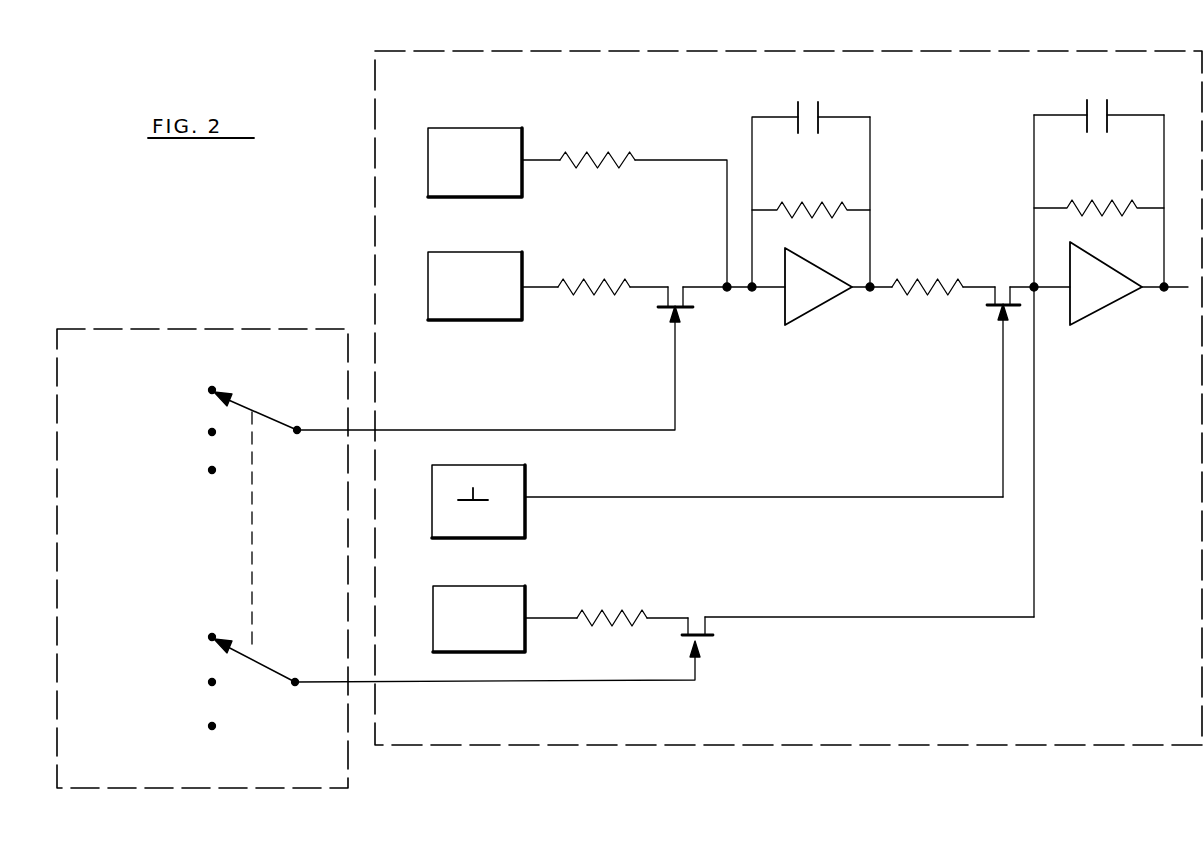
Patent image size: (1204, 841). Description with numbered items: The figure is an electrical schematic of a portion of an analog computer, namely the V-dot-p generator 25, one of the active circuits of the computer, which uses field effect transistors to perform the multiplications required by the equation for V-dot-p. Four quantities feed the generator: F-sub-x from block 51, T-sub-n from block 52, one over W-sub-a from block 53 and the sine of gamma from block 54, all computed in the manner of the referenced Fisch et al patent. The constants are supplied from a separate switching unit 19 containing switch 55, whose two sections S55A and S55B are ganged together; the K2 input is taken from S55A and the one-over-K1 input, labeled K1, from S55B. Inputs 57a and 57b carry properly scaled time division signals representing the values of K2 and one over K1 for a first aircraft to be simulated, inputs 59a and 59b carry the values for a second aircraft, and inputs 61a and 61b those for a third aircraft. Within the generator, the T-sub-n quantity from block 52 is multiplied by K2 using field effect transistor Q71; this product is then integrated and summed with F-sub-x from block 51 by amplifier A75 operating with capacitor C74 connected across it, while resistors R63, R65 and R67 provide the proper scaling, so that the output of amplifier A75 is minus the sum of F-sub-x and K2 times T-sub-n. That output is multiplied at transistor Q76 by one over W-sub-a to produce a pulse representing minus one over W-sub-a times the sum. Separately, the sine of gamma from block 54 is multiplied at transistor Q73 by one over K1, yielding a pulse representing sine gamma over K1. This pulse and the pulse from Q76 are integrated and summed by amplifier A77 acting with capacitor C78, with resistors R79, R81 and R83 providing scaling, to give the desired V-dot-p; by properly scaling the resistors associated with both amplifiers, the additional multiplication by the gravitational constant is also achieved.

The $v_p$ generator 25 is at (783, 51).
The switching unit 19 is at (208, 329).
The $F_x$ block 51 is at (430, 170).
The $T_n$ block 52 is at (430, 308).
The $1/W_a$ block 53 is at (432, 523).
The $\sin \gamma$ block 54 is at (433, 640).
The switch 55 is at (252, 565).
The input 57a is at (208, 390).
The input 59a is at (208, 432).
The input 61a is at (208, 470).
The input 57b is at (208, 637).
The input 59b is at (208, 682).
The input 61b is at (208, 726).
The switch section S55A is at (261, 409).
The switch section S55B is at (268, 660).
The $K_2$ input K2 is at (487, 383).
The $1/K_1$ input K1 is at (316, 693).
The resistor R63 is at (597, 148).
The resistor R65 is at (594, 274).
The resistor R67 is at (811, 197).
The resistor R79 is at (612, 608).
The resistor R81 is at (927, 274).
The resistor R83 is at (1099, 195).
The capacitor C74 is at (811, 185).
The capacitor C78 is at (1099, 185).
The amplifier A75 is at (818, 291).
The amplifier A77 is at (1106, 287).
The field effect transistor Q71 is at (694, 311).
The transistor Q73 is at (723, 634).
The transistor Q76 is at (985, 392).